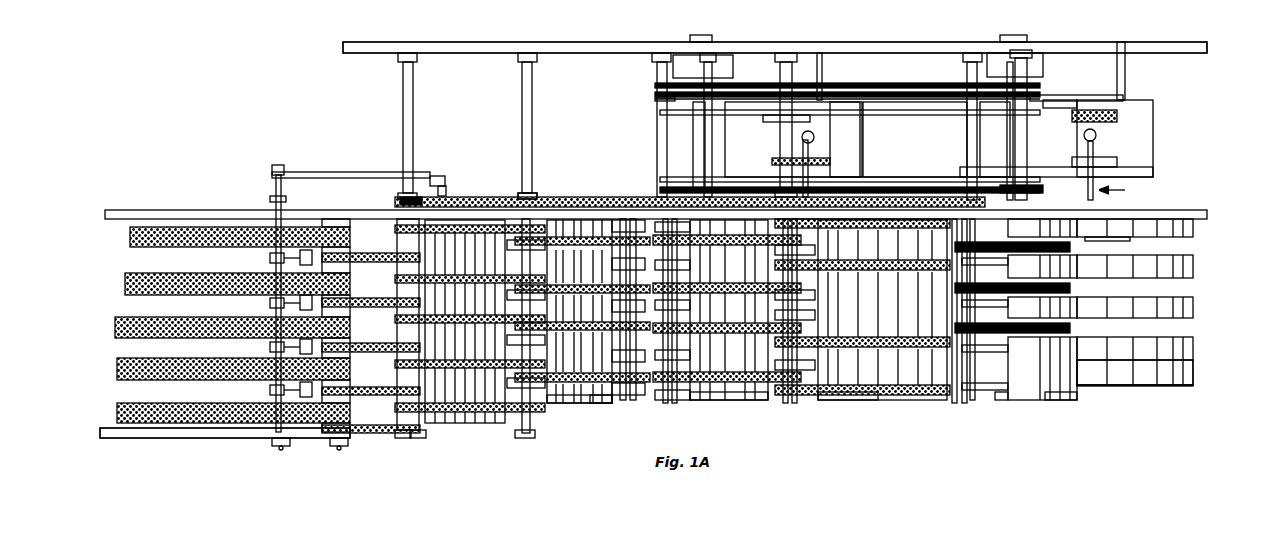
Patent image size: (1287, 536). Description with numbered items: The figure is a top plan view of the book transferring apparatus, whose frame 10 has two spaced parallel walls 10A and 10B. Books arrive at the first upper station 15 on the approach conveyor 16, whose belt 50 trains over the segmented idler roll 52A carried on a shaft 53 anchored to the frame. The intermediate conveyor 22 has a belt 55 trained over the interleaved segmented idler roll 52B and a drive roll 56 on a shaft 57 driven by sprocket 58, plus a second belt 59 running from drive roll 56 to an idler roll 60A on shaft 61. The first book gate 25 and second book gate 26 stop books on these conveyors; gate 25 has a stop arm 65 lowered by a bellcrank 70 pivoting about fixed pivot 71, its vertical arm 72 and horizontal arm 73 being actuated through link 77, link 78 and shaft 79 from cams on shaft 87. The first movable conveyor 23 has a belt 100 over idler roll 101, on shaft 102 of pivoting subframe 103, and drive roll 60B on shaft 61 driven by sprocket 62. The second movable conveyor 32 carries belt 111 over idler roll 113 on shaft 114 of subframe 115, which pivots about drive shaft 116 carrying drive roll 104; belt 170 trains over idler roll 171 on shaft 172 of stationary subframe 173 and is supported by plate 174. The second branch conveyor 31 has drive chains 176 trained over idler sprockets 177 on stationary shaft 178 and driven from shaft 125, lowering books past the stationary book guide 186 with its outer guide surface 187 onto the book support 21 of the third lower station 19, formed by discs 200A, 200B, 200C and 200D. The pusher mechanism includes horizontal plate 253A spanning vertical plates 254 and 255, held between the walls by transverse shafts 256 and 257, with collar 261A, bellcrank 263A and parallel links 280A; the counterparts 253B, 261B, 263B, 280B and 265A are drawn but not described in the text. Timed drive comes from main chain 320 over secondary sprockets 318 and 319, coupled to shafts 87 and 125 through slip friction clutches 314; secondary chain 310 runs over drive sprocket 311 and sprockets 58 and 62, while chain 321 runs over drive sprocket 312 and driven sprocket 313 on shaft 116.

The frame 10 is at (290, 68).
The frame wall 10A is at (1207, 212).
The frame wall 10B is at (474, 42).
The first upper station 15 is at (322, 487).
The approach conveyor 16 is at (245, 430).
The third lower station 19 is at (1093, 402).
The book support 21 is at (1193, 372).
The intermediate conveyor 22 is at (516, 420).
The first movable conveyor 23 is at (585, 406).
The first book gate 25 is at (270, 347).
The second book gate 26 is at (505, 346).
The second branch conveyor 31 is at (990, 402).
The second movable conveyor 32 is at (680, 402).
The conveyor belt 50 is at (168, 402).
The segmented idler roll 52A is at (350, 270).
The segmented idler roll 52B is at (350, 355).
The shaft 53 is at (338, 446).
The conveyor belt 55 is at (396, 406).
The drive roll 56 is at (410, 436).
The shaft 57 is at (413, 119).
The sprocket 58 is at (398, 196).
The second conveyor belt 59 is at (478, 392).
The idler roll 60A is at (537, 422).
The drive roll 60B is at (568, 386).
The shaft 61 is at (535, 106).
The sprocket 62 is at (536, 195).
The stop arm 65 is at (270, 303).
The bellcrank 70 is at (268, 183).
The fixed pivot 71 is at (283, 189).
The vertical arm 72 is at (282, 170).
The horizontal arm 73 is at (270, 258).
The link 77 is at (365, 172).
The link 78 is at (446, 178).
The shaft 79 is at (447, 190).
The shaft 87 is at (693, 128).
The conveyor belt 100 is at (598, 247).
The idler roll 101 is at (621, 402).
The shaft 102 is at (632, 402).
The subframe 103 is at (601, 406).
The drive roll 104 is at (801, 401).
The conveyor belt 111 is at (731, 401).
The idler roll 113 is at (680, 343).
The shaft 114 is at (680, 262).
The subframe 115 is at (712, 401).
The drive shaft 116 is at (795, 140).
The driven shaft 125 is at (996, 165).
The conveyor belt 170 is at (876, 401).
The idler roll 171 is at (955, 402).
The shaft 172 is at (948, 406).
The stationary subframe 173 is at (862, 307).
The plate 174 is at (846, 401).
The drive chains 176 is at (1027, 341).
The idler sprockets 177 is at (995, 312).
The stationary shaft 178 is at (990, 222).
The stationary book guide 186 is at (1001, 400).
The outer guide surface 187 is at (1052, 401).
The disc 200A is at (1195, 358).
The disc 200B is at (1193, 308).
The disc 200C is at (1193, 268).
The disc 200D is at (1193, 228).
The stationary horizontal plate 253A is at (1140, 136).
The housing 253B is at (862, 140).
The stationary vertical plate 254 is at (1125, 97).
The stationary vertical plate 255 is at (1153, 163).
The transverse shaft 256 is at (1122, 50).
The transverse shaft 257 is at (823, 52).
The collar 261A is at (1085, 135).
The pulley 261B is at (815, 137).
The bellcrank 263A is at (1130, 190).
The belt 263B is at (810, 150).
The arm 265A is at (1130, 240).
The parallel links 280A is at (1090, 108).
The carriage 280B is at (772, 162).
The secondary chain 310 is at (600, 197).
The drive sprocket 311 is at (690, 172).
The drive sprocket 312 is at (1030, 185).
The driven sprocket 313 is at (790, 191).
The slip friction clutch 314 is at (736, 57).
The secondary drive sprocket 318 is at (656, 99).
The secondary drive sprocket 319 is at (1030, 108).
The main drive chain 320 is at (881, 76).
The secondary drive chain 321 is at (945, 190).